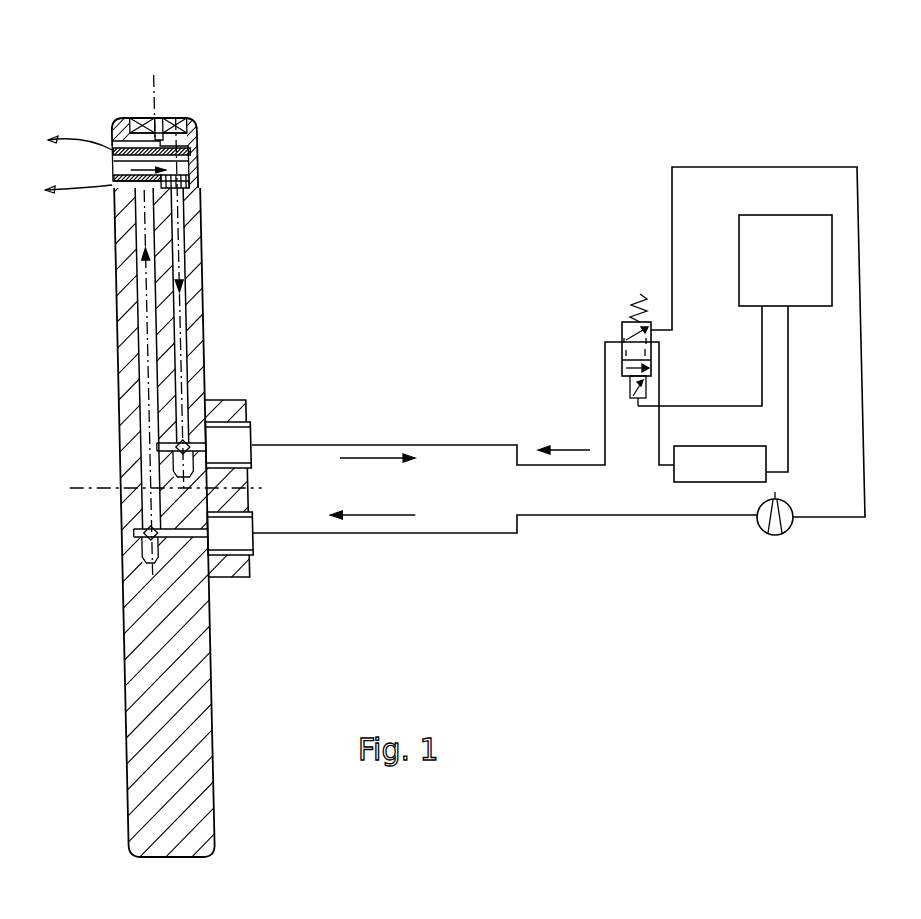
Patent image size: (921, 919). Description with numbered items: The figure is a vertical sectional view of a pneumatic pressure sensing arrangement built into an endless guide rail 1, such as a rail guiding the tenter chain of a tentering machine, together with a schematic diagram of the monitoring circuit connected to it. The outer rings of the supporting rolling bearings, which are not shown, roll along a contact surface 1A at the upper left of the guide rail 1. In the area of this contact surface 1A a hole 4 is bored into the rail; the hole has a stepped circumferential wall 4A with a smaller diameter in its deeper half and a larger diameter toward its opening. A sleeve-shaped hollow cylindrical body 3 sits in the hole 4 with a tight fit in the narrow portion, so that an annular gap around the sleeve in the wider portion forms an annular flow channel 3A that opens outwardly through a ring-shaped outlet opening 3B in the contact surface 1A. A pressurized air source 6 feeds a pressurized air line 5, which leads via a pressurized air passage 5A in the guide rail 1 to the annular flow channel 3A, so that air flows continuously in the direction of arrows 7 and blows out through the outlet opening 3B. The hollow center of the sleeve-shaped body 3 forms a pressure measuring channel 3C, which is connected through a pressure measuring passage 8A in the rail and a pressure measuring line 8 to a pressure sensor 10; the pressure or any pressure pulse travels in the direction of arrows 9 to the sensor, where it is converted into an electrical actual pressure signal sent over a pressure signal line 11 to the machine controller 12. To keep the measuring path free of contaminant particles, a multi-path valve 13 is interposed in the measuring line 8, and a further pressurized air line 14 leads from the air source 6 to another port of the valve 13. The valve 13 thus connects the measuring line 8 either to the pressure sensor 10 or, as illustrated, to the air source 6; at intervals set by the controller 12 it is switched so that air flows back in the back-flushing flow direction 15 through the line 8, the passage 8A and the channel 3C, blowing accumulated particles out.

The guide rail 1 is at (190, 235).
The contact surface 1A is at (108, 142).
The sleeve-shaped hollow cylindrical body 3 is at (197, 150).
The annular flow channel 3A is at (127, 113).
The annular outlet opening 3B is at (104, 150).
The pressure measuring channel 3C is at (195, 163).
The hole 4 is at (197, 135).
The stepped circumferential wall 4A is at (158, 180).
The pressurized air line 5 is at (578, 516).
The pressurized air passage 5A is at (198, 398).
The pressurized air source 6 is at (770, 527).
The arrows 7 is at (126, 303).
The pressure measuring line 8 is at (462, 445).
The pressure measuring passage 8A is at (193, 296).
The arrows 9 is at (176, 255).
The pressure sensor 10 is at (703, 484).
The pressure signal line 11 is at (790, 408).
The machine controller 12 is at (795, 266).
The multi-path valve 13 is at (625, 358).
The pressurized air line 14 is at (862, 417).
The back-flushing flow direction 15 is at (558, 450).